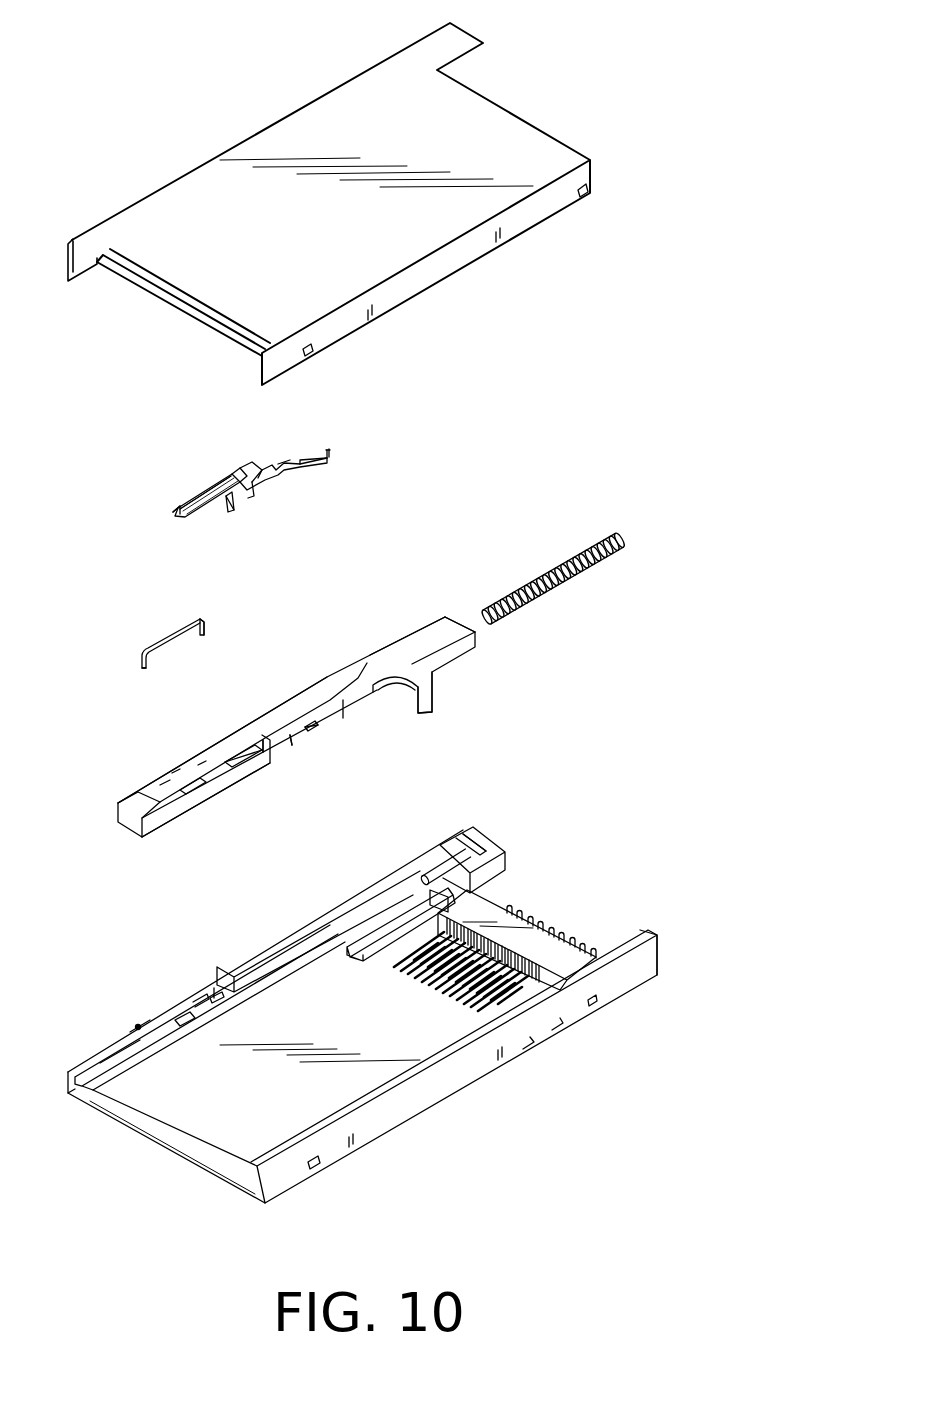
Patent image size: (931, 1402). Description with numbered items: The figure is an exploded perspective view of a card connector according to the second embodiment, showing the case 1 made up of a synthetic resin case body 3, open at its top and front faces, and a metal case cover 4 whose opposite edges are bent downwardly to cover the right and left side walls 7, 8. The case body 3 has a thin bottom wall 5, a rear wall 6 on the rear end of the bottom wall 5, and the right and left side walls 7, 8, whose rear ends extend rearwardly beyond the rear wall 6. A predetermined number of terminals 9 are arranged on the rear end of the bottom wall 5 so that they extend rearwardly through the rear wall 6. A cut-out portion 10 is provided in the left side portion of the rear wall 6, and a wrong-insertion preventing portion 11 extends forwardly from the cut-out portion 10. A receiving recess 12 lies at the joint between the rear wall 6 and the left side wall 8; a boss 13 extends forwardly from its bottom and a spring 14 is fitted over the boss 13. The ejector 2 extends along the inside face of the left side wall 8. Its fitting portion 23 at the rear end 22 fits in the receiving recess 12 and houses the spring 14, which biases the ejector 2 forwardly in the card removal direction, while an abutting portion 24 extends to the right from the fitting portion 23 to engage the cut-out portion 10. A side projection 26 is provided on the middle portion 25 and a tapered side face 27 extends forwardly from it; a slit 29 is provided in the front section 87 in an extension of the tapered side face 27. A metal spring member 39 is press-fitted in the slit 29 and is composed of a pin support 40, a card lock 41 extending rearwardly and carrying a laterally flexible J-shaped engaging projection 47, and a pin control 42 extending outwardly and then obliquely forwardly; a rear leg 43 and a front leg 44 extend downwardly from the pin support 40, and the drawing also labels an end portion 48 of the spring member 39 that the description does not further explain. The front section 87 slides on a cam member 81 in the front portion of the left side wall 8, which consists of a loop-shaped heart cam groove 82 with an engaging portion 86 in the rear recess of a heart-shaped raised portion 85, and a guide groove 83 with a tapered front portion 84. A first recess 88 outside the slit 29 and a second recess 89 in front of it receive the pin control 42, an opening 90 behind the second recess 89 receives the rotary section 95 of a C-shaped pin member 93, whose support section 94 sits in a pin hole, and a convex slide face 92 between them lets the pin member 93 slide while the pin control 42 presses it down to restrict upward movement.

The case 1 is at (463, 297).
The ejector 2 is at (306, 707).
The case body 3 is at (354, 981).
The case cover 4 is at (512, 112).
The bottom wall 5 is at (364, 1084).
The rear wall 6 is at (513, 943).
The right side wall 7 is at (426, 1098).
The left side wall 8 is at (297, 922).
The terminals 9 is at (640, 933).
The cut-out portion 10 is at (487, 882).
The wrong-insertion preventing portion 11 is at (378, 962).
The receiving recess 12 is at (420, 853).
The boss 13 is at (475, 832).
The spring 14 is at (543, 596).
The rear end 22 is at (407, 637).
The fitting portion 23 is at (437, 640).
The abutting portion 24 is at (433, 700).
The middle portion 25 is at (329, 676).
The side projection 26 is at (312, 730).
The tapered side face 27 is at (283, 740).
The slit 29 is at (263, 740).
The spring member 39 is at (279, 463).
The pin support 40 is at (255, 473).
The card lock 41 is at (329, 457).
The pin control 42 is at (203, 490).
The rear leg 43 is at (253, 497).
The front leg 44 is at (233, 514).
The J-shaped engaging projection 47 is at (330, 461).
The terminal tip 48 is at (176, 513).
The cam member 81 is at (136, 1025).
The cam groove 82 is at (182, 1022).
The guide groove 83 is at (108, 1068).
The tapered front portion 84 is at (77, 1096).
The heart-shaped raised portion 85 is at (197, 1000).
The engaging portion 86 is at (212, 998).
The front section 87 is at (182, 818).
The first recess 88 is at (230, 753).
The second recess 89 is at (175, 768).
The opening 90 is at (200, 763).
The slide face 92 is at (165, 780).
The pin member 93 is at (157, 633).
The support section 94 is at (140, 660).
The rotary section 95 is at (203, 620).